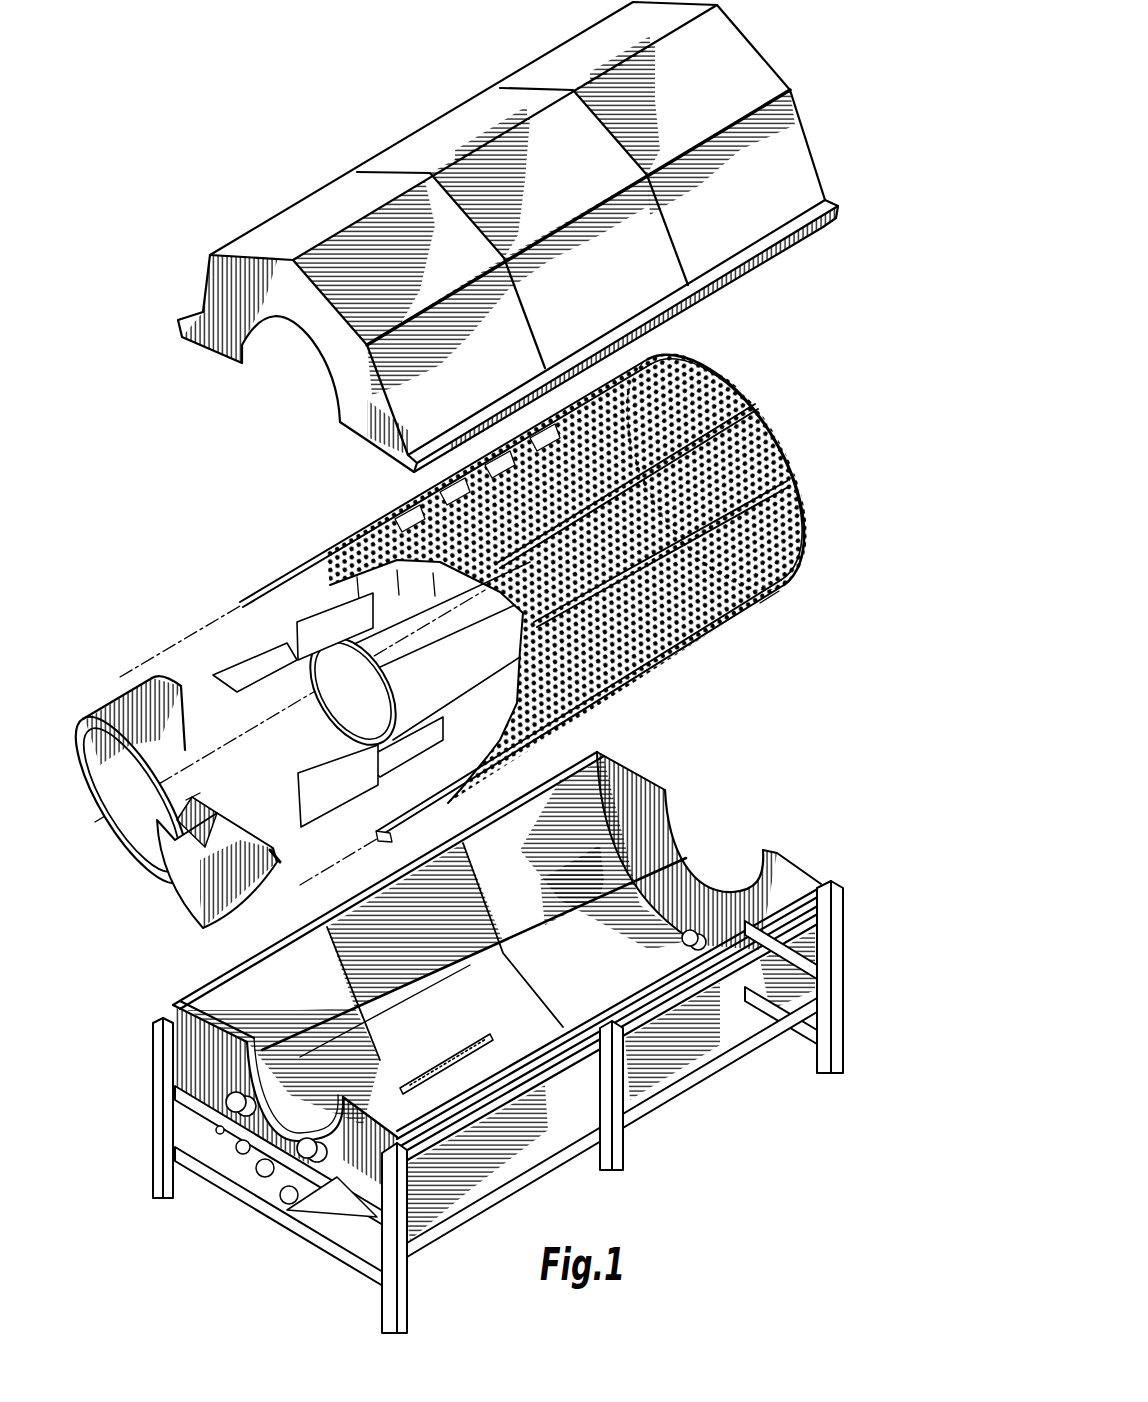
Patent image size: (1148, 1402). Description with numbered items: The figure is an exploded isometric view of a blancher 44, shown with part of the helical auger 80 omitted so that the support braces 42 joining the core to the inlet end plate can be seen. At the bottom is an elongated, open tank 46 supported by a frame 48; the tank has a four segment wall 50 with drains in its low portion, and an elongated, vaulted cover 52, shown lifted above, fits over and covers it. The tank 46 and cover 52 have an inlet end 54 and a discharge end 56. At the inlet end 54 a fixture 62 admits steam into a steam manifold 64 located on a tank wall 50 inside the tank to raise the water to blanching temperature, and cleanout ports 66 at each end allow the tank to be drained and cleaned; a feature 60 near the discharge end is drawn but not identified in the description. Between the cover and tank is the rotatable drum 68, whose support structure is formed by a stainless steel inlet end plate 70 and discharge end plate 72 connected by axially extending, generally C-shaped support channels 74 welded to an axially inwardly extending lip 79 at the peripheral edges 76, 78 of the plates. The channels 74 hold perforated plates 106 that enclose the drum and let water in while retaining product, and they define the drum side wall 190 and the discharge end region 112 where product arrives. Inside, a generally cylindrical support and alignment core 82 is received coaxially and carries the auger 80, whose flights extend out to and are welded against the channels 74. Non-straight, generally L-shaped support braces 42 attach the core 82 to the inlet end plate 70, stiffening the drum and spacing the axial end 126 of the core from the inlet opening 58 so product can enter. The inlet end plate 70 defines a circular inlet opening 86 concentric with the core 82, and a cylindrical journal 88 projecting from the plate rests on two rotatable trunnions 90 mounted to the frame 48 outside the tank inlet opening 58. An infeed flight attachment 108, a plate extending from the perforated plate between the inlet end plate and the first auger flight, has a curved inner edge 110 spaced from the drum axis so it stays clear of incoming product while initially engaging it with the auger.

The support brace 42 is at (292, 625).
The blancher 44 is at (880, 355).
The tank 46 is at (481, 986).
The frame 48 is at (683, 1093).
The four segment wall 50 is at (562, 866).
The cover 52 is at (767, 53).
The inlet end 54 is at (457, 1107).
The discharge end 56 is at (647, 772).
The tank inlet opening 58 is at (273, 1068).
The semicircular opening 60 is at (686, 846).
The fixture 62 is at (257, 1185).
The steam manifold 64 is at (443, 1060).
The cleanout port 66 is at (283, 1204).
The drum 68 is at (514, 557).
The inlet end plate 70 is at (180, 898).
The discharge end plate 72 is at (757, 418).
The support channel 74 is at (784, 457).
The peripheral edge 76 is at (293, 885).
The peripheral edge 78 is at (662, 360).
The lip 79 is at (172, 671).
The helical auger 80 is at (480, 776).
The support and alignment core 82 is at (458, 649).
The inlet opening 86 is at (132, 843).
The journal 88 is at (122, 873).
The trunnion 90 is at (215, 1082).
The perforated plate 106 is at (812, 526).
The infeed flight attachment 108 is at (199, 808).
The curved inner edge 110 is at (200, 805).
The discharge end region 112 is at (762, 612).
The axial end 126 is at (313, 688).
The side wall 190 is at (690, 643).